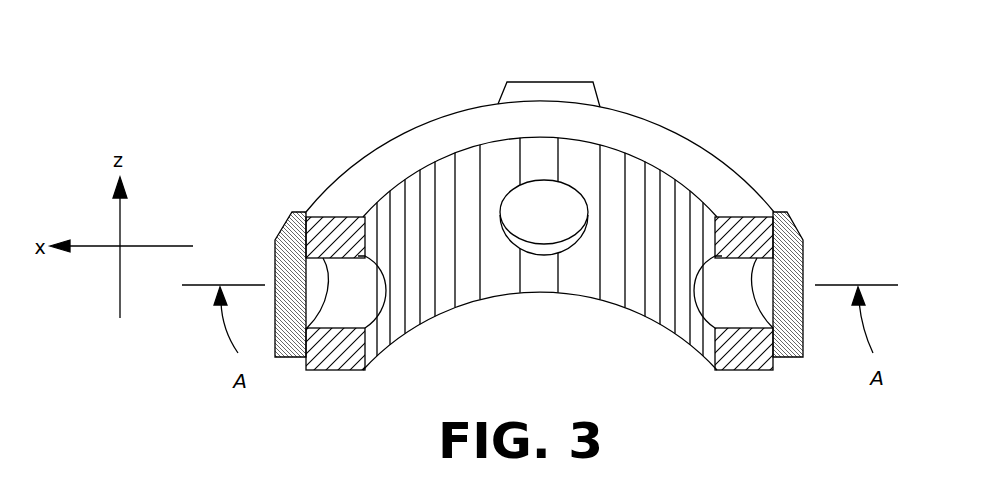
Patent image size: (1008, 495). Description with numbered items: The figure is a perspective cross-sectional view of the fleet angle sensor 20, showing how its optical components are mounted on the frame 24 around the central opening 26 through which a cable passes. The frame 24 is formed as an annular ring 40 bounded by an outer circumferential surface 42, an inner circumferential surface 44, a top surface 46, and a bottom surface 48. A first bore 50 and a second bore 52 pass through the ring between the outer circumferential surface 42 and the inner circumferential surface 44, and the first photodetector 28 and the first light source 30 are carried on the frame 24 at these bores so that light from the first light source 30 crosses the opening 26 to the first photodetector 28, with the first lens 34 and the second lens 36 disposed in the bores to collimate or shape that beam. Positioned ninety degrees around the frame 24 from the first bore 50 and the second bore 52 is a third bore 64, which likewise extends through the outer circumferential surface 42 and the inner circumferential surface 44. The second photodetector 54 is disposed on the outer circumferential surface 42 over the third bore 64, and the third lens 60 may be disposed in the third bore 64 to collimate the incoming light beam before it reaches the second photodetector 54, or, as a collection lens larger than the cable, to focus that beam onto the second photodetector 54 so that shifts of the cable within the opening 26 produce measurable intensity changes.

The fleet angle sensor 20 is at (542, 217).
The frame 24 is at (733, 175).
The opening 26 is at (464, 158).
The first photodetector 28 is at (295, 268).
The first light source 30 is at (788, 252).
The first lens 34 is at (316, 287).
The second lens 36 is at (766, 287).
The annular ring 40 is at (335, 232).
The outer circumferential surface 42 is at (775, 362).
The inner circumferential surface 44 is at (652, 205).
The top surface 46 is at (393, 170).
The bottom surface 48 is at (577, 293).
The first bore 50 is at (352, 305).
The second bore 52 is at (732, 305).
The second photodetector 54 is at (560, 88).
The third lens 60 is at (548, 210).
The third bore 64 is at (538, 247).